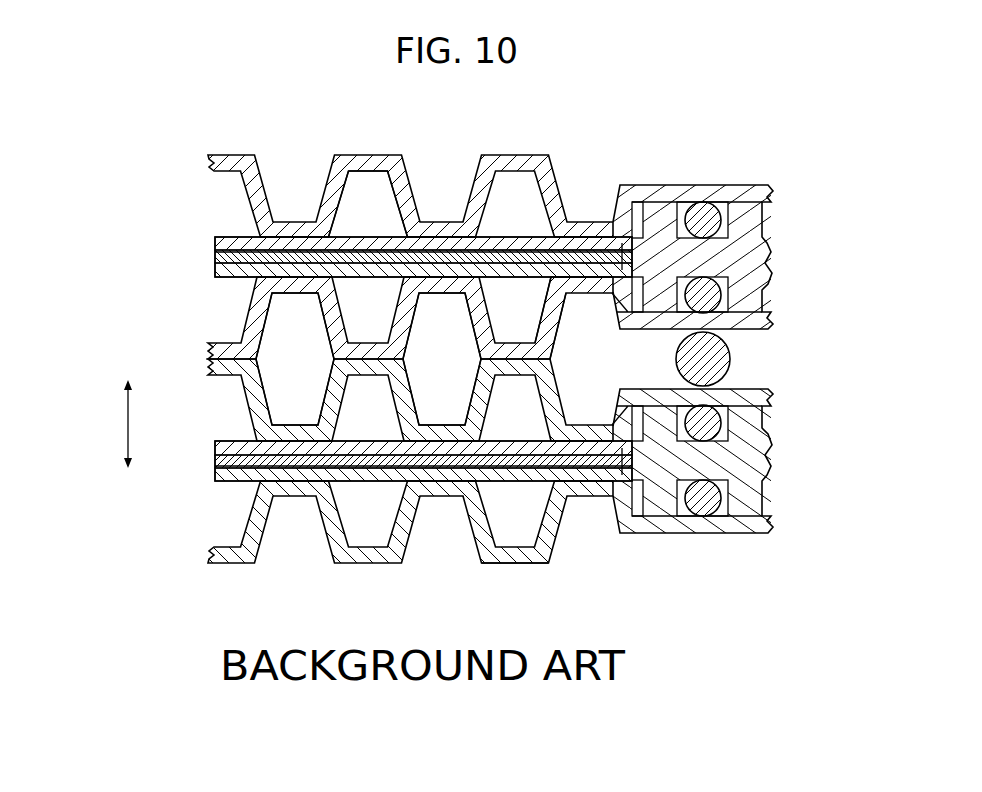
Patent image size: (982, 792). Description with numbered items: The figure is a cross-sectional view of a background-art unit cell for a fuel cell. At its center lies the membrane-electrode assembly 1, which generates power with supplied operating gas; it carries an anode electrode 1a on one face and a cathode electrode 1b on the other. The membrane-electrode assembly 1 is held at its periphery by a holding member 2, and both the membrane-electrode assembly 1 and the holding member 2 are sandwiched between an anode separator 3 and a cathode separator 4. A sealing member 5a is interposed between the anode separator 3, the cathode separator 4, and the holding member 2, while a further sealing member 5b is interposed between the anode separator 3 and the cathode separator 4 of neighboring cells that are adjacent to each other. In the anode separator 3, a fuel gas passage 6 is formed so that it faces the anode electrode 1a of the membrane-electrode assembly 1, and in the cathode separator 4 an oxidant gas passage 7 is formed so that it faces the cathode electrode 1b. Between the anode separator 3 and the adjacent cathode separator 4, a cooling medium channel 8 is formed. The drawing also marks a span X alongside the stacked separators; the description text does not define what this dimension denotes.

The membrane-electrode assembly 1 is at (212, 256).
The anode electrode 1a is at (242, 246).
The cathode electrode 1b is at (244, 268).
The holding member 2 is at (637, 258).
The anode separator 3 is at (512, 172).
The cathode separator 4 is at (547, 320).
The sealing member 5a is at (708, 219).
The sealing member 5b is at (722, 352).
The fuel gas passage 6 is at (370, 183).
The oxidant gas passage 7 is at (357, 305).
The cooling medium channel 8 is at (287, 380).
The pitch dimension X is at (119, 424).